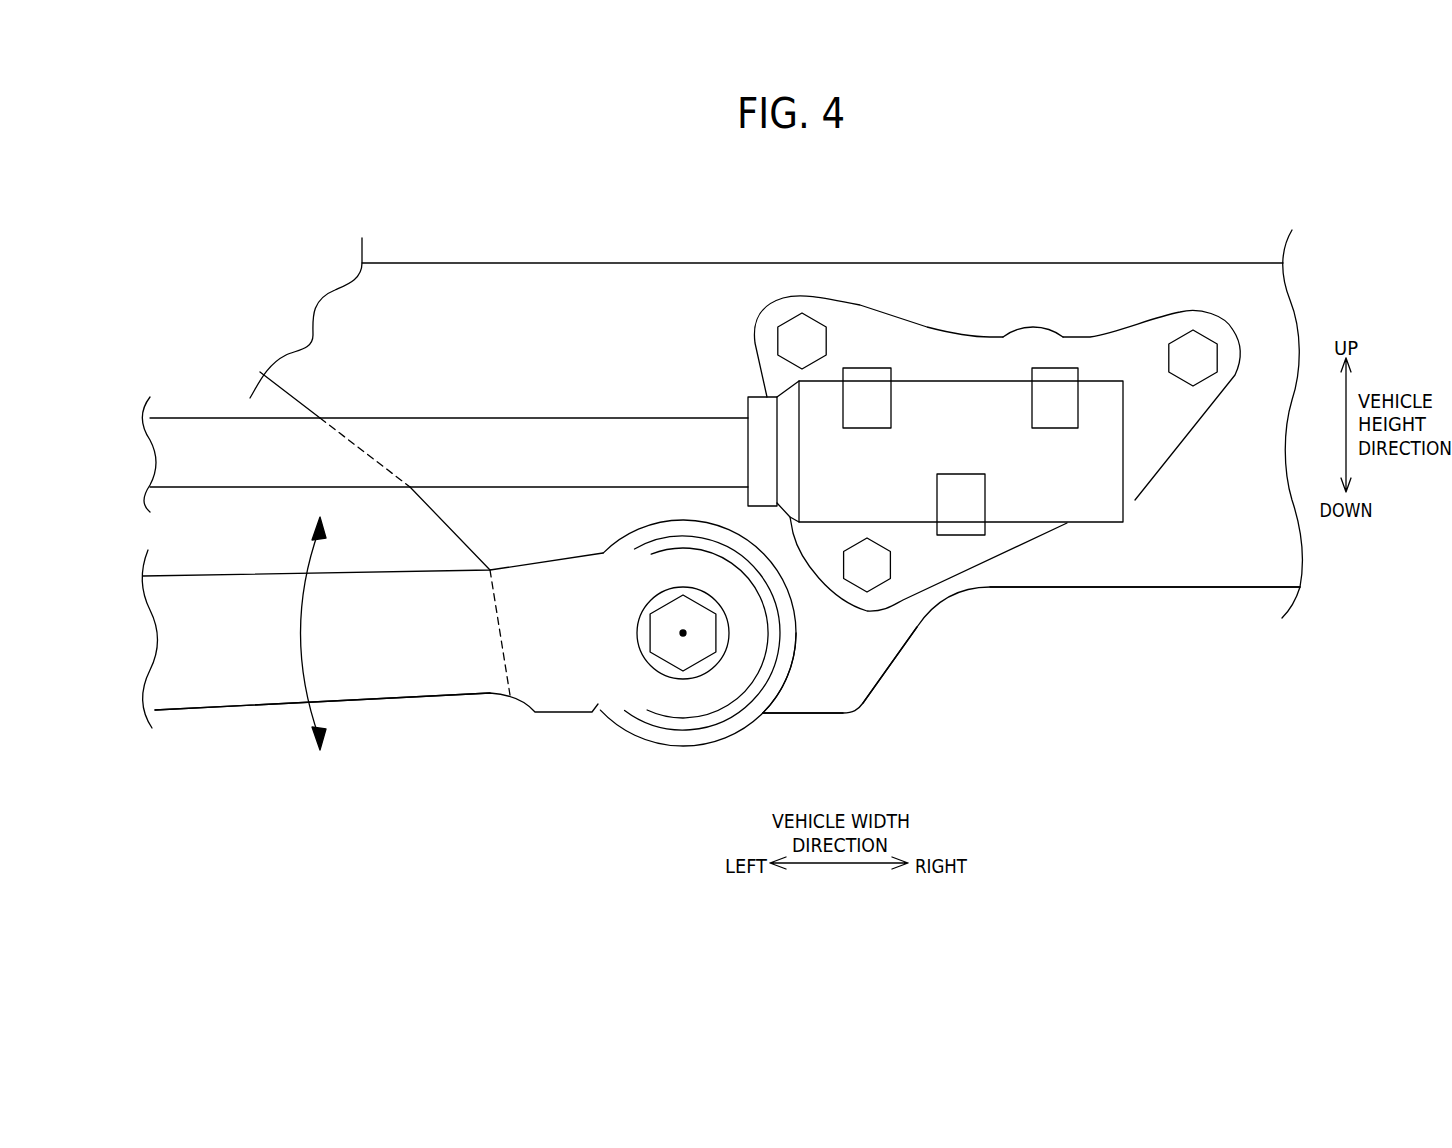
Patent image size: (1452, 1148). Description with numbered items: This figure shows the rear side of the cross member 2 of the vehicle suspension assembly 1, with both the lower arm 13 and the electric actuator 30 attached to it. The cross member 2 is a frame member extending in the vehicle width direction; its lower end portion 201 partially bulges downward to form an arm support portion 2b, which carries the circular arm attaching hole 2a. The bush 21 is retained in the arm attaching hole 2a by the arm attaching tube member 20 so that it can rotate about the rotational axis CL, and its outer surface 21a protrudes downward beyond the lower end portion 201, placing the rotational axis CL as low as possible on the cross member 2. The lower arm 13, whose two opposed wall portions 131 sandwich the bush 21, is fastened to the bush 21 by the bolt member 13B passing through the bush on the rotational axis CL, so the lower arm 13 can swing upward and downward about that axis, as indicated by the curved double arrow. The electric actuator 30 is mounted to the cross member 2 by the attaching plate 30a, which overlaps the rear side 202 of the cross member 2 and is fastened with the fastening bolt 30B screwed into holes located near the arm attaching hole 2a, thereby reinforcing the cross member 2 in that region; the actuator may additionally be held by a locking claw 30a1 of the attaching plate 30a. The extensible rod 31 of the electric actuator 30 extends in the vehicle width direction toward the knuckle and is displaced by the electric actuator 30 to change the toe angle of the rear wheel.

The vehicle suspension device 1 is at (1105, 226).
The cross member 2 is at (1162, 590).
The arm attaching hole 2a is at (782, 668).
The arm support portion 2b is at (826, 717).
The lower arm 13 is at (398, 672).
The bolt member 13B is at (665, 604).
The wall portions 131 is at (240, 712).
The arm attaching tube member 20 is at (612, 720).
The bush 21 is at (698, 722).
The outer surface 21a is at (757, 717).
The electric actuator 30 is at (933, 380).
The attaching plate 30a is at (1097, 336).
The locking claw 30a1 is at (1050, 368).
The fastening bolt 30B is at (1203, 338).
The extensible rod 31 is at (603, 415).
The lower end portion 201 is at (893, 665).
The rear side 202 is at (1243, 553).
The rotational axis CL is at (683, 633).